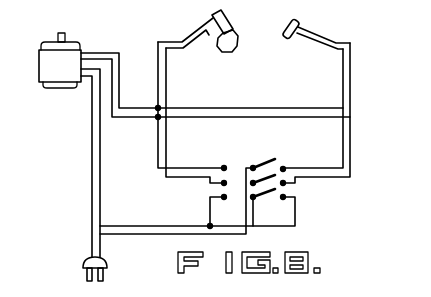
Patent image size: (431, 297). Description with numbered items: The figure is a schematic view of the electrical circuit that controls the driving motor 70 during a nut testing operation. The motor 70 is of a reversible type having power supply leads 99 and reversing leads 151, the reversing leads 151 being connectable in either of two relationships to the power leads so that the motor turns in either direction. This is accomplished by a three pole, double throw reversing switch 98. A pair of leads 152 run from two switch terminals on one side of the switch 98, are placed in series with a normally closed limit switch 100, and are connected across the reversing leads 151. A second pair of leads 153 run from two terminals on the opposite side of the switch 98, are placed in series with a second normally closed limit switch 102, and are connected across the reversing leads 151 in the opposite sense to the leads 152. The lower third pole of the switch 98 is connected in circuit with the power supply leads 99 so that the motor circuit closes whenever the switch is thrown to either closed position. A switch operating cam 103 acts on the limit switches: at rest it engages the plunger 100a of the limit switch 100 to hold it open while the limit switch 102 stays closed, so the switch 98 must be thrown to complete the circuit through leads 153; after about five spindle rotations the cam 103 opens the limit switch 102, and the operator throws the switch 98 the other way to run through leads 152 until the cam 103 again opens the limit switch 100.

The motor 70 is at (52, 61).
The power supply leads 99 is at (80, 150).
The reversing leads 151 is at (107, 90).
The pair of leads 152 is at (153, 145).
The second pair of leads 153 is at (332, 140).
The reversing switch 98 is at (249, 163).
The limit switch 100 is at (199, 26).
The plunger 100a is at (219, 26).
The switch operating cam 103 is at (222, 49).
The second limit switch 102 is at (302, 30).